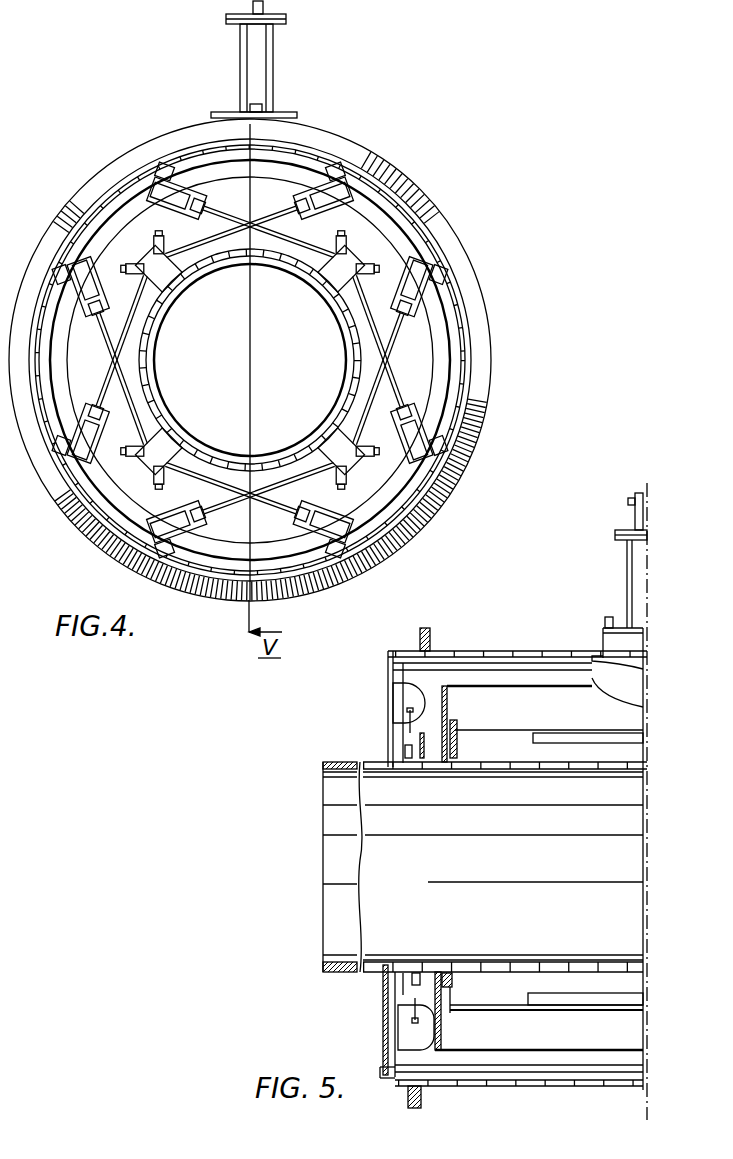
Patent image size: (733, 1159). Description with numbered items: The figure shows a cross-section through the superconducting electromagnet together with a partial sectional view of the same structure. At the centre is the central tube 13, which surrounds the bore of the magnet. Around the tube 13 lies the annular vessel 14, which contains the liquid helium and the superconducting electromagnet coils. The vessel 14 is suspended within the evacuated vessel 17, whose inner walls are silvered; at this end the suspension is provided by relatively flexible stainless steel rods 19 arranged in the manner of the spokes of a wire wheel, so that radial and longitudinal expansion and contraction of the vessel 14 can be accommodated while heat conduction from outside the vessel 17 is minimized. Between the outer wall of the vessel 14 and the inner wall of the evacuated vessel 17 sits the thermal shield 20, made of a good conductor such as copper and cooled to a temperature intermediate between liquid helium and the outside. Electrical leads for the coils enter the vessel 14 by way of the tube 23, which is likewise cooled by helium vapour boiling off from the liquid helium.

In FIG. 4, the central tube 13 is at (195, 445).
In FIG. 5, the central tube 13 is at (540, 770).
In FIG. 4, the annular vessel 14 is at (387, 238).
In FIG. 5, the annular vessel 14 is at (435, 703).
In FIG. 4, the evacuated vessel 17 is at (335, 157).
In FIG. 5, the evacuated vessel 17 is at (411, 651).
In FIG. 4, the stainless steel rods 19 is at (357, 433).
In FIG. 5, the stainless steel rods 19 is at (415, 1015).
In FIG. 4, the thermal shield 20 is at (297, 163).
In FIG. 5, the thermal shield 20 is at (505, 683).
In FIG. 4, the tube 23 is at (240, 66).
In FIG. 5, the tube 23 is at (632, 562).